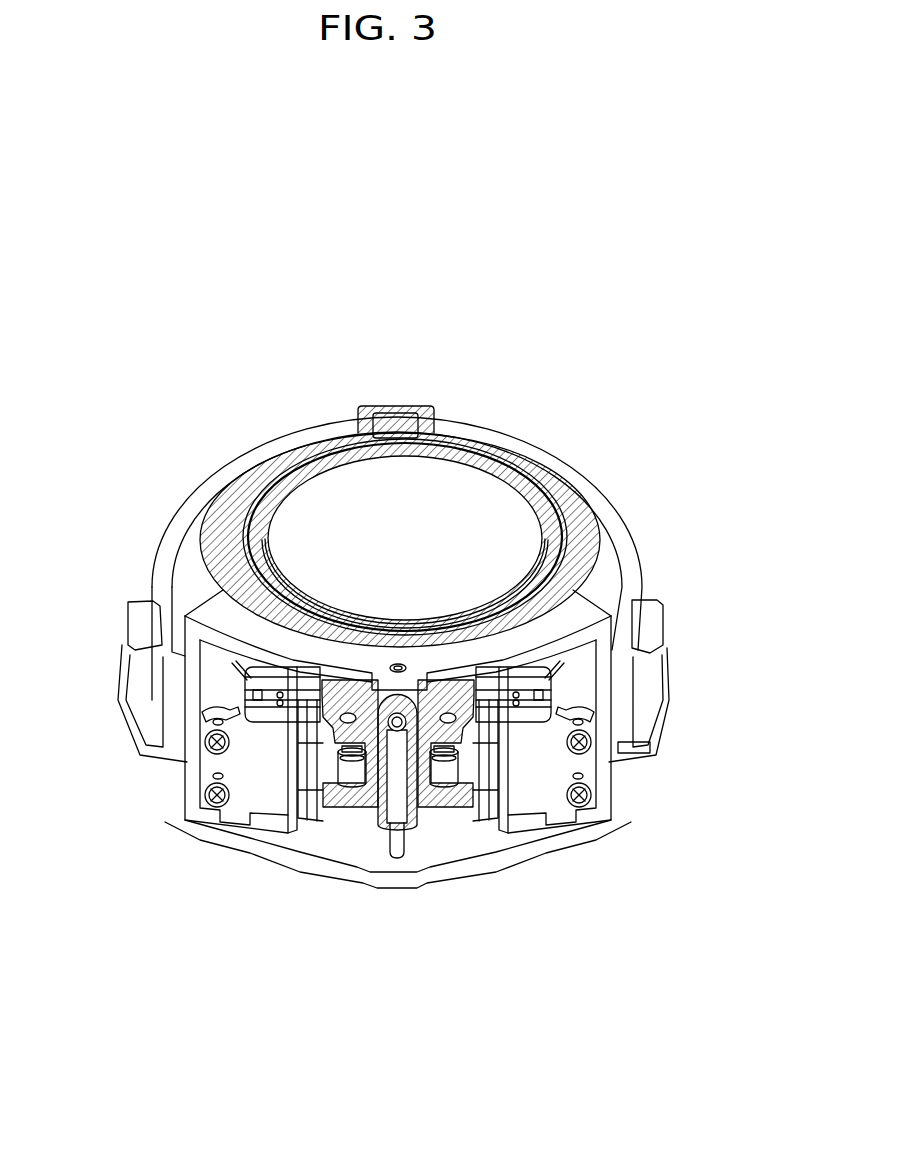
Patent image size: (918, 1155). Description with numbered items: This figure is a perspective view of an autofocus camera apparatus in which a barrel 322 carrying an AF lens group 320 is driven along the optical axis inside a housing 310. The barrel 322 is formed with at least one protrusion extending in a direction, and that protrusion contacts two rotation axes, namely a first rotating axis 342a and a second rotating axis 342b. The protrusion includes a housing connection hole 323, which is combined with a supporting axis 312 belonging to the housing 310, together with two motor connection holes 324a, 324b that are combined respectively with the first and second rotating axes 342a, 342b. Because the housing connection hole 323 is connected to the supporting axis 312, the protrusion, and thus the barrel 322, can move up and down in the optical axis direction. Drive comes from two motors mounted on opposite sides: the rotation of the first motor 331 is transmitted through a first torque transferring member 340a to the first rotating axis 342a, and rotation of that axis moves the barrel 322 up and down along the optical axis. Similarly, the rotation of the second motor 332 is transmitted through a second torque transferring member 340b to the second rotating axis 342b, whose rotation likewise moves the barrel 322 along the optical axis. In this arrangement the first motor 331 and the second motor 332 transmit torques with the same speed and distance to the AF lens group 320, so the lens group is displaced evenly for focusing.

The housing 310 is at (562, 470).
The supporting axis 312 is at (398, 850).
The AF lens group 320 is at (428, 490).
The barrel 322 is at (570, 550).
The housing connection hole 323 is at (415, 805).
The first motor connection hole 324a is at (330, 775).
The second motor connection hole 324b is at (489, 780).
The first motor 331 is at (220, 760).
The second motor 332 is at (560, 762).
The first torque transferring member 340a is at (312, 767).
The second torque transferring member 340b is at (484, 767).
The first rotating axis 342a is at (352, 765).
The second rotating axis 342b is at (471, 785).